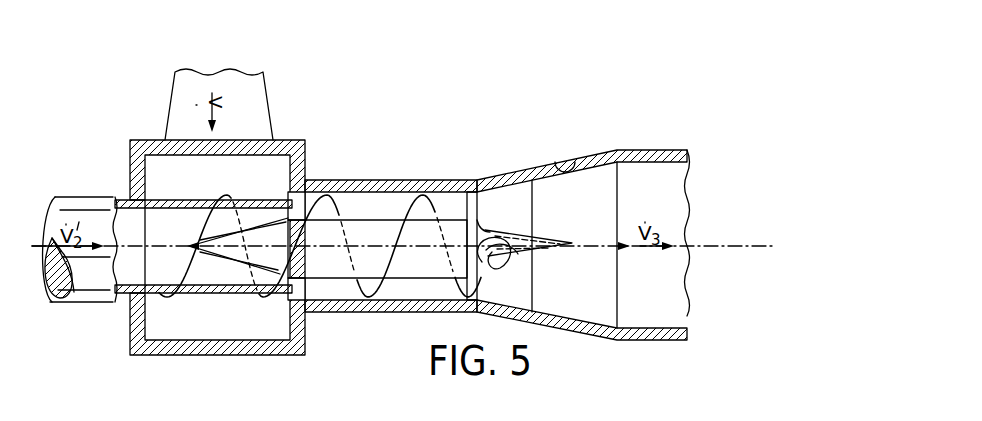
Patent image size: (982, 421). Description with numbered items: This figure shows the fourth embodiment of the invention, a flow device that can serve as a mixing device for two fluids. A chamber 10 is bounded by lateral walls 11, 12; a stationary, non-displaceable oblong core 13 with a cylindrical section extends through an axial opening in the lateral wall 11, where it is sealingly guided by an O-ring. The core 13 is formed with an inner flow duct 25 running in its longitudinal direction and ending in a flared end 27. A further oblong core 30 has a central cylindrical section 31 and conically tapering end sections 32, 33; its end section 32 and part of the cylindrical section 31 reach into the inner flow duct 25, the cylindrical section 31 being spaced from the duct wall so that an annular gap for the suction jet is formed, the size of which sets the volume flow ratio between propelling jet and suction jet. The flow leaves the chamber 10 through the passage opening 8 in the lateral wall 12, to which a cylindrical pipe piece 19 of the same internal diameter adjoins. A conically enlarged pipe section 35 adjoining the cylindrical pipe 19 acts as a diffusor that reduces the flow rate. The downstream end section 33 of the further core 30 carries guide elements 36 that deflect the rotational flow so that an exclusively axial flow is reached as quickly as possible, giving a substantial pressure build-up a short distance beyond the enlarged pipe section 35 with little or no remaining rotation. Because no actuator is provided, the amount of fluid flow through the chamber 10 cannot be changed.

The passage opening 8 is at (312, 197).
The chamber 10 is at (250, 170).
The lateral wall 11 is at (131, 322).
The lateral wall 12 is at (305, 328).
The oblong core 13 is at (204, 296).
The cylindrical pipe piece 19 is at (390, 319).
The inner flow duct 25 is at (162, 216).
The flared end 27 is at (285, 202).
The further oblong core 30 is at (355, 205).
The central cylindrical section 31 is at (378, 230).
The end section 32 is at (230, 250).
The downstream end section 33 is at (501, 231).
The conically enlarged pipe section 35 is at (582, 157).
The guide elements 36 is at (495, 264).